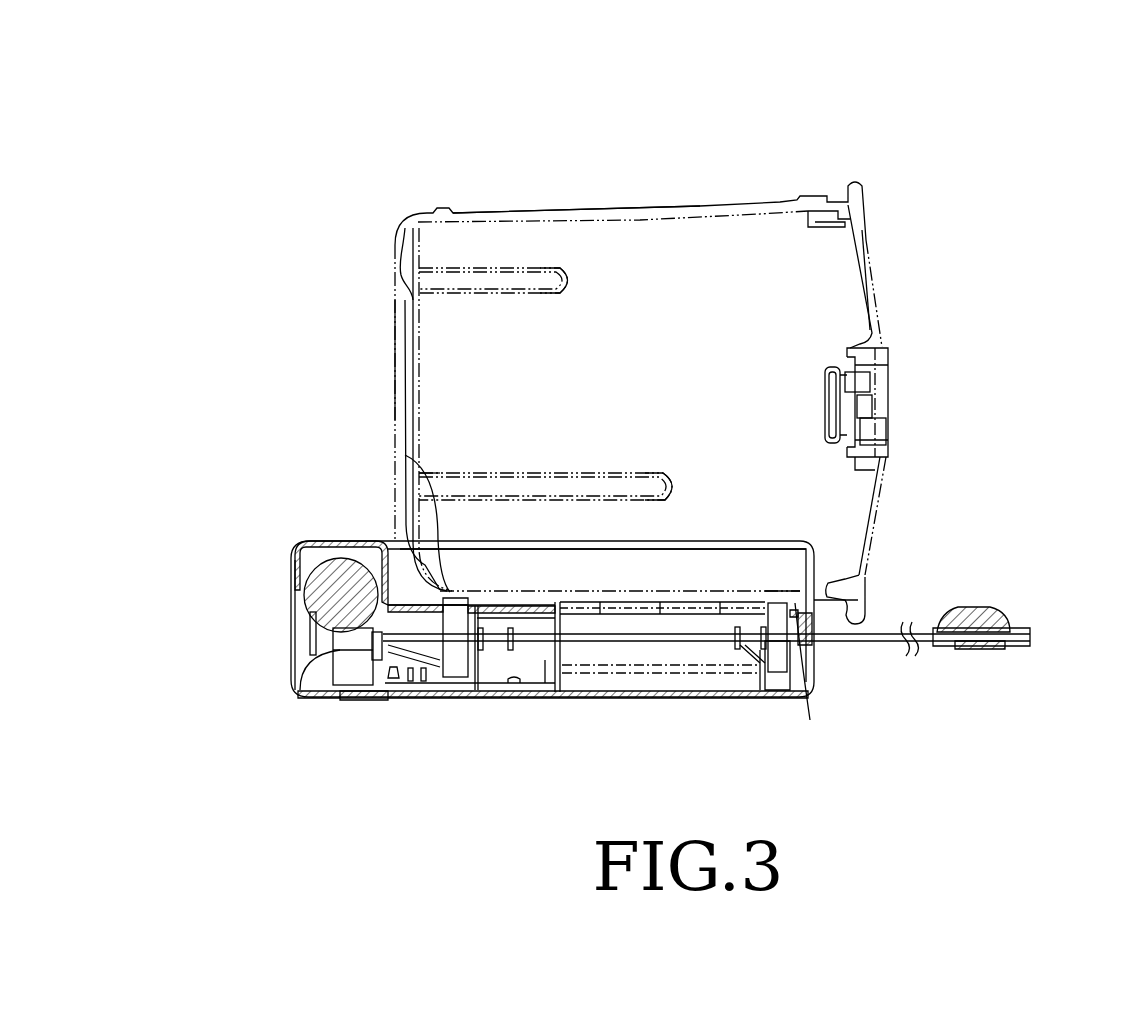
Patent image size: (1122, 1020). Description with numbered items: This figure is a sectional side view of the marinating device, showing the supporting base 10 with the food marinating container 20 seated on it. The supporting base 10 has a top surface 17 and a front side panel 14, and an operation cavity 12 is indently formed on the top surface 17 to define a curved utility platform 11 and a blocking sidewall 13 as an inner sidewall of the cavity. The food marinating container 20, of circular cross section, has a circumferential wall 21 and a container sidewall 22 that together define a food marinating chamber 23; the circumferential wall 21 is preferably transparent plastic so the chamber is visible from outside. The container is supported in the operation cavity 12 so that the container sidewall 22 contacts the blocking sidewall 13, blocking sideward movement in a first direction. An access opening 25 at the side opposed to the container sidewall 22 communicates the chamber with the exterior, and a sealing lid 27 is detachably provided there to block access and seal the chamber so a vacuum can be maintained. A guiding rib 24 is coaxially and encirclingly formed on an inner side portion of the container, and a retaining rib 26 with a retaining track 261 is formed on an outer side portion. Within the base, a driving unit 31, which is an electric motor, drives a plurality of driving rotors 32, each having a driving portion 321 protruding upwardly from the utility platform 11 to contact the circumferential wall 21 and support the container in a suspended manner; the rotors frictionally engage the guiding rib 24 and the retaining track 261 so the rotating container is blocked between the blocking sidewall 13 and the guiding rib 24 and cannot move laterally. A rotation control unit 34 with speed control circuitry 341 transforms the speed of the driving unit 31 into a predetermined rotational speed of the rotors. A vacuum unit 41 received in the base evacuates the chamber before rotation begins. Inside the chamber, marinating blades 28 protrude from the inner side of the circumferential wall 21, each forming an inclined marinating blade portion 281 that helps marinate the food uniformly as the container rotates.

The supporting base 10 is at (294, 598).
The curved utility platform 11 is at (514, 602).
The operation cavity 12 is at (739, 565).
The blocking sidewall 13 is at (419, 472).
The front side panel 14 is at (295, 578).
The top surface 17 is at (335, 546).
The food marinating container 20 is at (737, 118).
The circumferential wall 21 is at (488, 217).
The container sidewall 22 is at (400, 315).
The food marinating chamber 23 is at (783, 313).
The guiding rib 24 is at (448, 678).
The access opening 25 is at (850, 315).
The retaining rib 26 is at (855, 608).
The sealing lid 27 is at (797, 598).
The marinating blades 28 is at (440, 280).
The driving unit 31 is at (333, 662).
The driving rotors 32 is at (455, 665).
The rotation control unit 34 is at (372, 693).
The vacuum unit 41 is at (320, 618).
The retaining track 261 is at (783, 614).
The inclined marinating blade portion 281 is at (521, 271).
The driving portion 321 is at (458, 596).
The speed control circuitry 341 is at (418, 692).